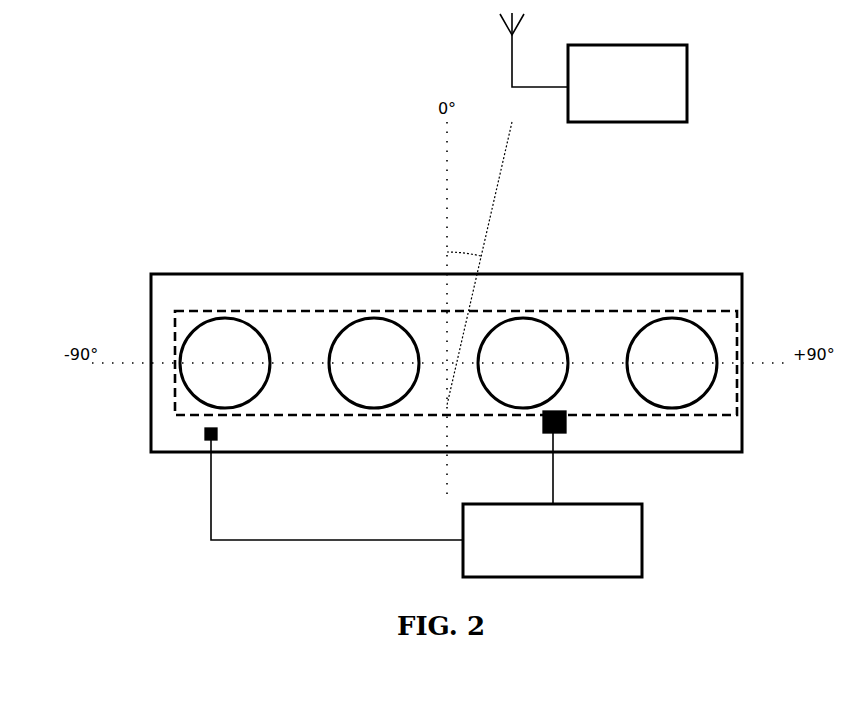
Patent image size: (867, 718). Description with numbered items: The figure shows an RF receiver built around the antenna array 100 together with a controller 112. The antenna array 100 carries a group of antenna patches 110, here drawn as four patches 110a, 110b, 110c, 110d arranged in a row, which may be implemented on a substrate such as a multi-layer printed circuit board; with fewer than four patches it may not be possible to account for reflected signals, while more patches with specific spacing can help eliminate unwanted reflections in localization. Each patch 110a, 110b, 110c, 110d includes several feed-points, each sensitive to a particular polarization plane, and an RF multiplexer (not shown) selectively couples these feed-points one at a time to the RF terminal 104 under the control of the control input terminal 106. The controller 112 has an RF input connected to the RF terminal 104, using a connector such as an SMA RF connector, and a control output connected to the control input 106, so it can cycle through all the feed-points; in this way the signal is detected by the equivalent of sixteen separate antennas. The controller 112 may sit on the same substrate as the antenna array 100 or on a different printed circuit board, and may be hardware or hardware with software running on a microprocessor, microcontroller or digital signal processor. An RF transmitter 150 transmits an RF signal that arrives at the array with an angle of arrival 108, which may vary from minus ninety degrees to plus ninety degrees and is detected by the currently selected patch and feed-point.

The antenna array 100 is at (264, 268).
The RF terminal 104 is at (544, 434).
The control input terminal 106 is at (208, 441).
The angle of arrival 108 is at (463, 252).
The antenna patches 110 is at (633, 311).
The antenna patch 110a is at (225, 363).
The antenna patch 110b is at (374, 363).
The antenna patch 110c is at (523, 363).
The antenna patch 110d is at (672, 363).
The controller 112 is at (552, 540).
The RF transmitter 150 is at (593, 67).